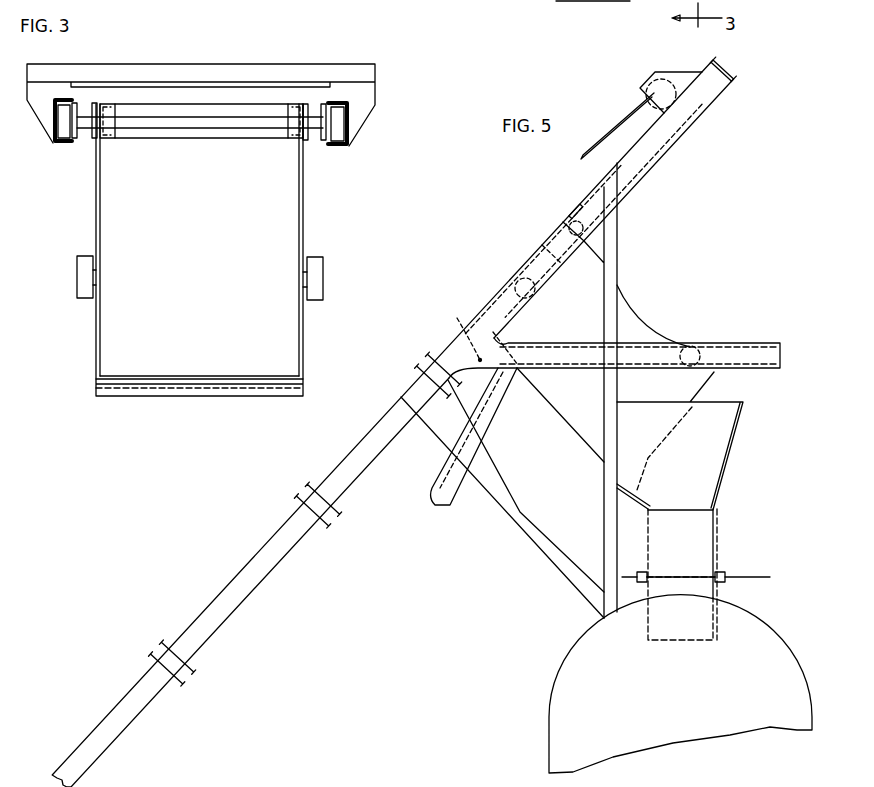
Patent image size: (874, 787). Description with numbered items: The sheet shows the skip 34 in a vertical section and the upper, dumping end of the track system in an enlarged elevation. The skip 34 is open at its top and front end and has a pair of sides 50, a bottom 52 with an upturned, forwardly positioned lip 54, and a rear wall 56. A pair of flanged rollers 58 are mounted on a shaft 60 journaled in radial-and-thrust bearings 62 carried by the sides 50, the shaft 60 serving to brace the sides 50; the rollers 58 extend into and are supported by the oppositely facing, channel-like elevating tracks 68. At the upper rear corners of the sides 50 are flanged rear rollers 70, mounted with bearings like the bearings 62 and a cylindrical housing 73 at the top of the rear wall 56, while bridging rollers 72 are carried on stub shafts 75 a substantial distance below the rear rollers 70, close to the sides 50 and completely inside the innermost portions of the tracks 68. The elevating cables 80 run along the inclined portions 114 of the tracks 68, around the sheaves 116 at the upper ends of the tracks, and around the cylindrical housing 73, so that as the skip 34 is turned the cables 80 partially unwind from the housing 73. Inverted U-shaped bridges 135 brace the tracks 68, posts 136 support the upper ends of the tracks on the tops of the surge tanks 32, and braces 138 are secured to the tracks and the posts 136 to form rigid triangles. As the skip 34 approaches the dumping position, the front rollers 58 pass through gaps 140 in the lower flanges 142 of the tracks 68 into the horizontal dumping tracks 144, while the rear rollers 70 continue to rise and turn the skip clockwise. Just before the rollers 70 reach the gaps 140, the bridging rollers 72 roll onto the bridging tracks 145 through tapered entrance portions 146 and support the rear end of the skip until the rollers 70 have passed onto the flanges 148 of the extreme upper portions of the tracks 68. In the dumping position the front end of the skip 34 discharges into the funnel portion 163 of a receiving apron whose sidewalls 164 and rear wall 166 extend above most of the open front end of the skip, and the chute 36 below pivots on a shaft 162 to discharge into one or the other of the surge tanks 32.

In FIG. 5, the surge tank 32 is at (592, 633).
In FIG. 3, the skip 34 is at (90, 382).
In FIG. 5, the skip 34 is at (651, 308).
In FIG. 5, the chute 36 is at (713, 598).
In FIG. 3, the side 50 is at (95, 211).
In FIG. 5, the bottom 52 is at (514, 0).
In FIG. 3, the lip 54 is at (160, 388).
In FIG. 3, the rear wall 56 is at (110, 343).
In FIG. 3, the flanged roller 58 is at (62, 119).
In FIG. 5, the flanged roller 58 is at (696, 346).
In FIG. 3, the shaft 60 is at (77, 139).
In FIG. 3, the radial-and-thrust bearing 62 is at (118, 140).
In FIG. 3, the elevating track 68 is at (53, 143).
In FIG. 5, the elevating track 68 is at (270, 596).
In FIG. 5, the rear roller 70 is at (568, 226).
In FIG. 3, the bridging roller 72 is at (77, 298).
In FIG. 5, the bridging roller 72 is at (513, 290).
In FIG. 3, the cylindrical housing 73 is at (181, 140).
In FIG. 3, the stub shaft 75 is at (77, 276).
In FIG. 5, the elevating cable 80 is at (632, 110).
In FIG. 5, the inclined portion 114 is at (338, 503).
In FIG. 5, the sheave 116 is at (656, 112).
In FIG. 3, the bridge 135 is at (208, 73).
In FIG. 5, the bridge 135 is at (293, 493).
In FIG. 5, the post 136 is at (604, 527).
In FIG. 5, the brace 138 is at (515, 525).
In FIG. 5, the gap 140 is at (462, 322).
In FIG. 5, the lower flange 142 is at (386, 442).
In FIG. 5, the dumping track 144 is at (545, 370).
In FIG. 5, the bridging track 145 is at (487, 423).
In FIG. 5, the tapered entrance portion 146 is at (436, 504).
In FIG. 5, the flange 148 is at (540, 255).
In FIG. 5, the shaft 162 is at (740, 577).
In FIG. 5, the funnel portion 163 is at (625, 509).
In FIG. 5, the sidewall 164 is at (708, 468).
In FIG. 5, the rear wall 166 is at (743, 403).